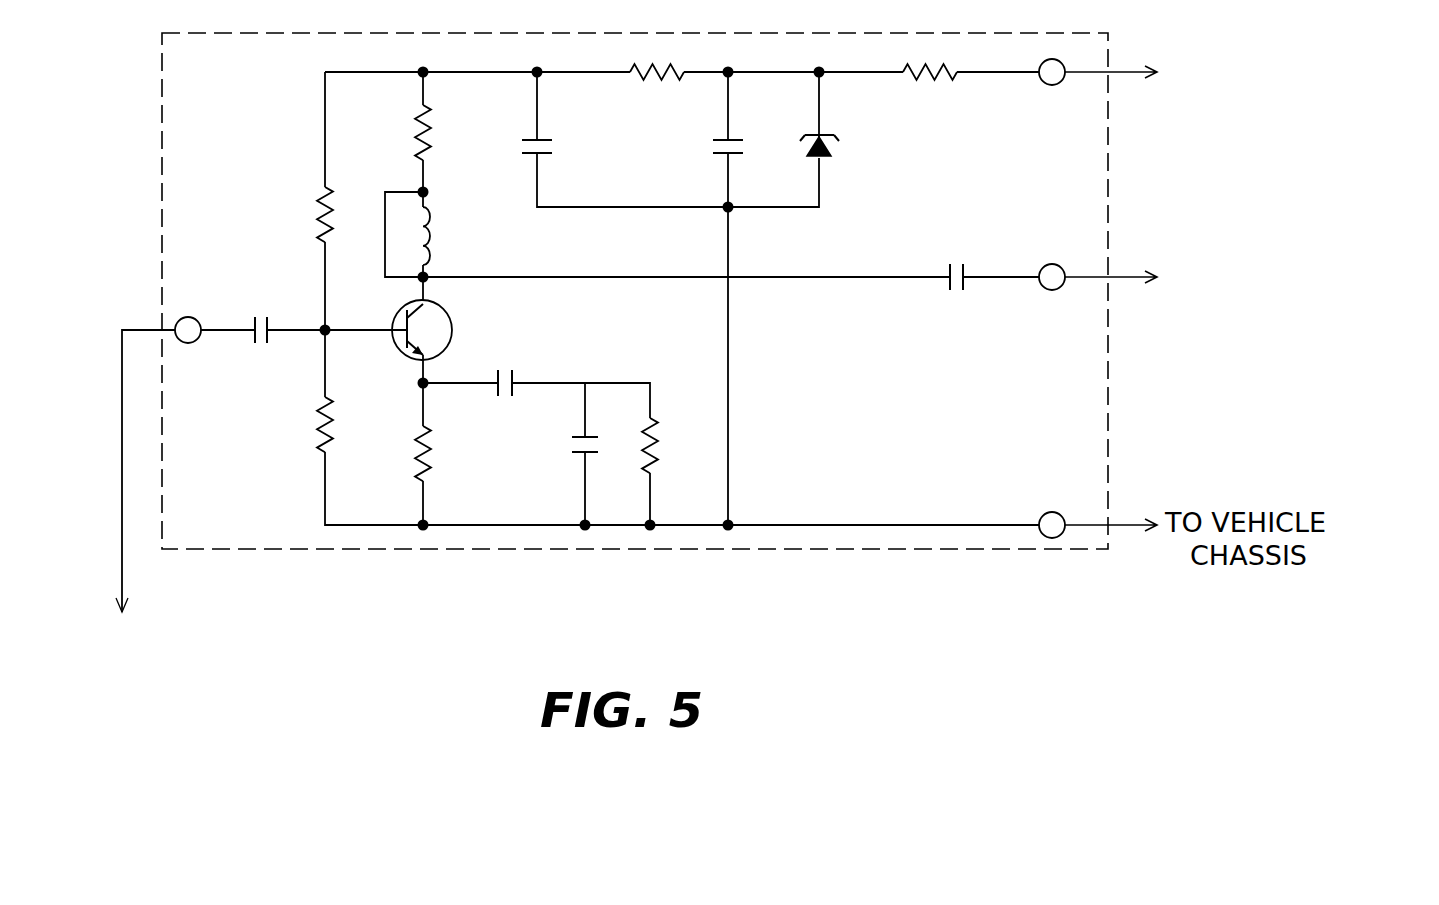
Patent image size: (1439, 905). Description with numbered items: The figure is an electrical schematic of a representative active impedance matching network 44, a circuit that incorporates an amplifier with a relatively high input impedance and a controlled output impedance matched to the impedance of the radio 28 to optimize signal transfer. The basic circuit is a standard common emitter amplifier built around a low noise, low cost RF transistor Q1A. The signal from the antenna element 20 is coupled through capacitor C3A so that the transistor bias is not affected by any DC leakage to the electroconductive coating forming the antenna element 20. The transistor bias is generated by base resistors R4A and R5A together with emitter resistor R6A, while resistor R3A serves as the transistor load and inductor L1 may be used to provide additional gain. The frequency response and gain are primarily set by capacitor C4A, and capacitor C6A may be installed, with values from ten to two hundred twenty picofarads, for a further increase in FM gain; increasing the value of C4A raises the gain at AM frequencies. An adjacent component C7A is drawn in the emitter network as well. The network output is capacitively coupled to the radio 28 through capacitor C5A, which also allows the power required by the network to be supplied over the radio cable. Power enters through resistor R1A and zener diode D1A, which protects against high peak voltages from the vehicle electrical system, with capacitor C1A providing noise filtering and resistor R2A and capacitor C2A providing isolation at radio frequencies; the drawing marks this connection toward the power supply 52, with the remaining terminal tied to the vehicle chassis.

The resistor R1A is at (929, 80).
The resistor R2A is at (656, 80).
The resistor R3A is at (427, 117).
The base resistor R4A is at (318, 212).
The base resistor R5A is at (328, 407).
The emitter resistor R6A is at (433, 437).
The capacitor C1A is at (717, 155).
The capacitor C2A is at (548, 140).
The capacitor C3A is at (253, 352).
The capacitor C4A is at (515, 380).
The capacitor C5A is at (948, 300).
The capacitor C6A is at (578, 450).
The component C7A is at (656, 428).
The zener diode D1A is at (835, 146).
The inductor L1 is at (431, 219).
The RF transistor Q1A is at (437, 299).
The active impedance matching network 44 is at (1110, 353).
The power supply 52 is at (1230, 94).
The radio 28 is at (1203, 275).
The antenna element 20 is at (256, 507).